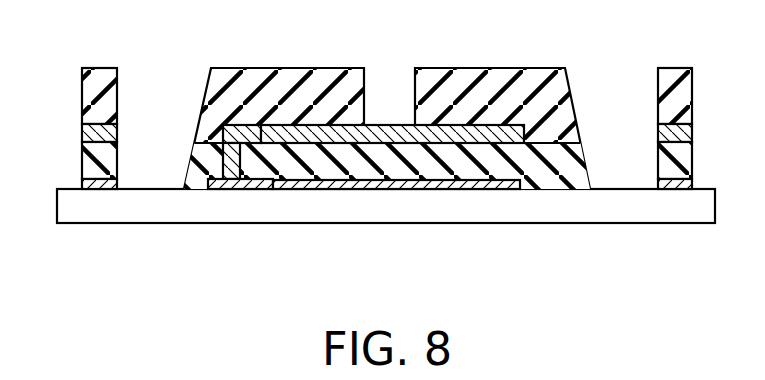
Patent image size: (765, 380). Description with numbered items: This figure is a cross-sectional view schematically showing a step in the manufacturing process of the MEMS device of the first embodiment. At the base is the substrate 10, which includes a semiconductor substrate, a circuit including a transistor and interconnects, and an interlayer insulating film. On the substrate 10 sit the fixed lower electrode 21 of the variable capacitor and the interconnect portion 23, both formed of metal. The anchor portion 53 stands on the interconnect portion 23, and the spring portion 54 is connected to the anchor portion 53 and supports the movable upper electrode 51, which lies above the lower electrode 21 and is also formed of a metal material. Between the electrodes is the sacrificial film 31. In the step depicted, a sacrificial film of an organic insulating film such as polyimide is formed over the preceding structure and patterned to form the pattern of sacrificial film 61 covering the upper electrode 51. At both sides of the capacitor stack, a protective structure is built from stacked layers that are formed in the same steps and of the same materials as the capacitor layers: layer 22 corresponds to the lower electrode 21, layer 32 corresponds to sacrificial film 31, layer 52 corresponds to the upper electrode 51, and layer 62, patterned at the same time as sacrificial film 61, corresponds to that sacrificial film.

The substrate 10 is at (160, 224).
The lower electrode 21 is at (400, 185).
The layer 22 is at (103, 185).
The interconnect portion 23 is at (233, 185).
The sacrificial film 31 is at (578, 185).
The layer 32 is at (82, 158).
The upper electrode 51 is at (400, 125).
The layer 52 is at (82, 132).
The anchor portion 53 is at (223, 160).
The spring portion 54 is at (238, 130).
The sacrificial film 61 is at (315, 68).
The layer 62 is at (82, 97).